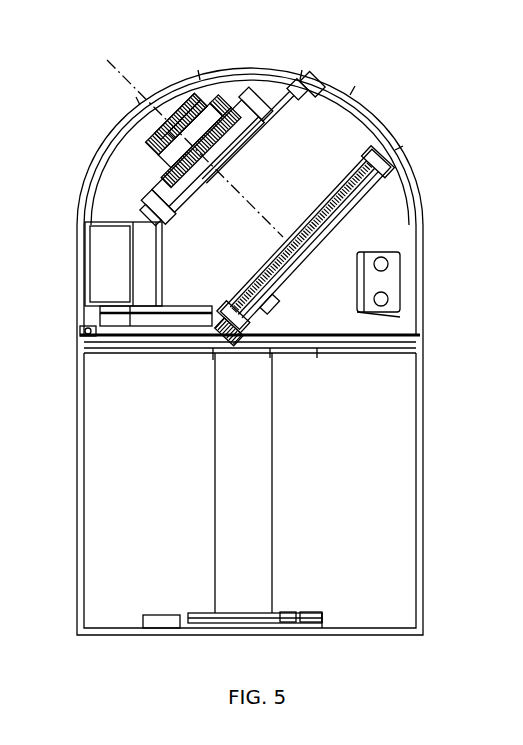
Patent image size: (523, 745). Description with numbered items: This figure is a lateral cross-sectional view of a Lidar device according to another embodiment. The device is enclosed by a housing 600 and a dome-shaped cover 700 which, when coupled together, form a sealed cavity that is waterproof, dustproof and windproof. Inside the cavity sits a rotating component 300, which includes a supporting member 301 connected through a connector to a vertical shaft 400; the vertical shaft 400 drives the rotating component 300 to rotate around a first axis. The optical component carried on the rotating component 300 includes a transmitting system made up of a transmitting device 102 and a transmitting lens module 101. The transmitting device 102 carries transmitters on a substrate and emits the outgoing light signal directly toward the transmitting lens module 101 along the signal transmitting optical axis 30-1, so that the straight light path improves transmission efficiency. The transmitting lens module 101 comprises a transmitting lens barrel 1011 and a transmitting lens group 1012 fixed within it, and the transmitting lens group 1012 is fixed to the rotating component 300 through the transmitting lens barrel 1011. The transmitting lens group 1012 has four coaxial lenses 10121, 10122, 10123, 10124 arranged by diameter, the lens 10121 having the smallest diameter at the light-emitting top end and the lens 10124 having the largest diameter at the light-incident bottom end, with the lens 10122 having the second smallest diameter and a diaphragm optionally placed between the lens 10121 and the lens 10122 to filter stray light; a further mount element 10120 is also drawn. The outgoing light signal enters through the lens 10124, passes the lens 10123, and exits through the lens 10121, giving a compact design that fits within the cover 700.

The transmitting lens module 101 is at (226, 129).
The transmitting lens barrel 1011 is at (204, 158).
The transmitting lens group 1012 is at (189, 125).
The mount plate 10120 is at (178, 116).
The lens having the smallest diameter 10121 is at (187, 119).
The lens having the second smallest diameter 10122 is at (220, 105).
The lens 10123 is at (297, 89).
The lens having the largest diameter 10124 is at (312, 84).
The cover 700 is at (402, 160).
The transmitting device 102 is at (336, 260).
The signal transmitting optical axis 30-1 is at (303, 258).
The rotating component 300 is at (112, 245).
The supporting member 301 is at (83, 327).
The housing 600 is at (420, 458).
The vertical shaft 400 is at (255, 484).